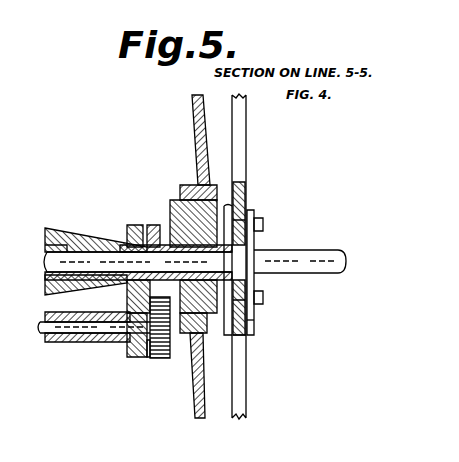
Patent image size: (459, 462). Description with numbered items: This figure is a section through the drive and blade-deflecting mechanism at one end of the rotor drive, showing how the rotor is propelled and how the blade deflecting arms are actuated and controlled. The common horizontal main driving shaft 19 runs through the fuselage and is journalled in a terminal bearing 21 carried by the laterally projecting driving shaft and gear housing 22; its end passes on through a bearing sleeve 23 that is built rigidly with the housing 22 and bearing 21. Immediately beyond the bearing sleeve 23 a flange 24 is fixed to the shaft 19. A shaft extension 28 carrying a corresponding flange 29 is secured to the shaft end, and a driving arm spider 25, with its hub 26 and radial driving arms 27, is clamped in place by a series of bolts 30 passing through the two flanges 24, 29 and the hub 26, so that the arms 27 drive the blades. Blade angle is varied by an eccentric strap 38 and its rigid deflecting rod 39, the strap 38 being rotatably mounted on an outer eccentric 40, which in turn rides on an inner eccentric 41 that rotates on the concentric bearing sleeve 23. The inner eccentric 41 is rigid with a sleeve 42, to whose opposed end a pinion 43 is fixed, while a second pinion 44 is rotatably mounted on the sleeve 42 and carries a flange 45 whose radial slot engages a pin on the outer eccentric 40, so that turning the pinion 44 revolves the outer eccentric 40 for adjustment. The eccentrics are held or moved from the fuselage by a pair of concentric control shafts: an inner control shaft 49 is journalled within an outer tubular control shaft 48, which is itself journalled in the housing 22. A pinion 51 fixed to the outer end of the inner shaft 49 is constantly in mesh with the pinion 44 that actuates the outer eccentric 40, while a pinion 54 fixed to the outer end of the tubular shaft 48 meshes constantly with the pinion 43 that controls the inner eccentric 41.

The main driving shaft 19 is at (47, 262).
The terminal bearing 21 is at (88, 234).
The driving shaft and gear housing 22 is at (50, 291).
The bearing sleeve 23 is at (162, 242).
The flange 24 is at (246, 192).
The driving arm spider 25 is at (257, 348).
The hub 26 is at (254, 326).
The radial driving arm 27 is at (246, 126).
The shaft extension 28 is at (324, 248).
The flange 29 is at (252, 210).
The bolt 30 is at (264, 225).
The eccentric strap 38 is at (197, 186).
The deflecting rod 39 is at (195, 112).
The outer eccentric 40 is at (224, 193).
The inner eccentric 41 is at (183, 198).
The sleeve 42 is at (137, 225).
The pinion 43 is at (127, 292).
The pinion 44 is at (124, 346).
The flange 45 is at (194, 378).
The outer tubular control shaft 48 is at (74, 343).
The inner control shaft 49 is at (42, 327).
The pinion 51 is at (160, 360).
The pinion 54 is at (136, 357).